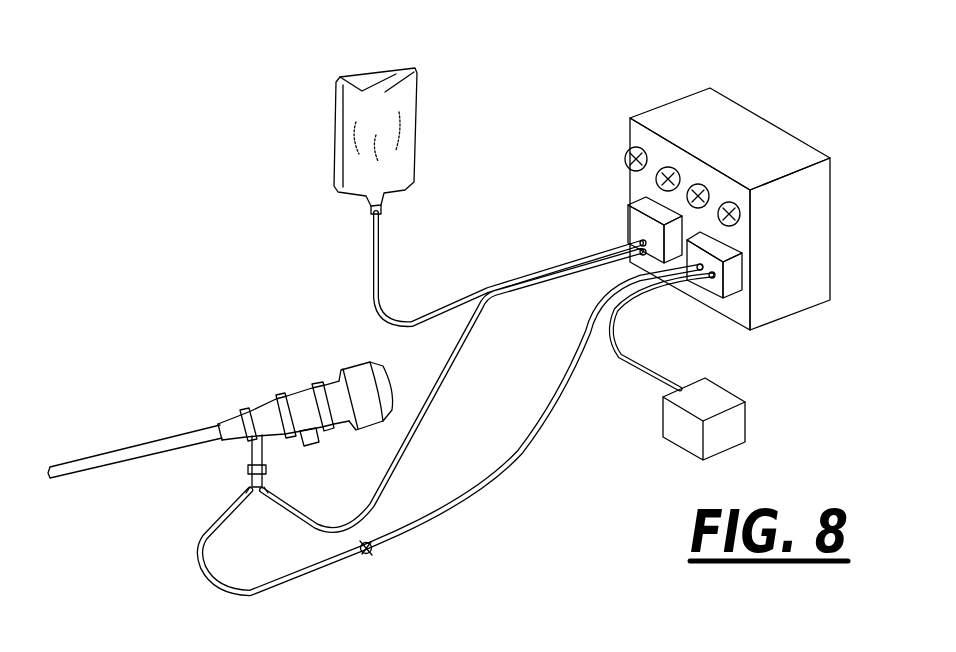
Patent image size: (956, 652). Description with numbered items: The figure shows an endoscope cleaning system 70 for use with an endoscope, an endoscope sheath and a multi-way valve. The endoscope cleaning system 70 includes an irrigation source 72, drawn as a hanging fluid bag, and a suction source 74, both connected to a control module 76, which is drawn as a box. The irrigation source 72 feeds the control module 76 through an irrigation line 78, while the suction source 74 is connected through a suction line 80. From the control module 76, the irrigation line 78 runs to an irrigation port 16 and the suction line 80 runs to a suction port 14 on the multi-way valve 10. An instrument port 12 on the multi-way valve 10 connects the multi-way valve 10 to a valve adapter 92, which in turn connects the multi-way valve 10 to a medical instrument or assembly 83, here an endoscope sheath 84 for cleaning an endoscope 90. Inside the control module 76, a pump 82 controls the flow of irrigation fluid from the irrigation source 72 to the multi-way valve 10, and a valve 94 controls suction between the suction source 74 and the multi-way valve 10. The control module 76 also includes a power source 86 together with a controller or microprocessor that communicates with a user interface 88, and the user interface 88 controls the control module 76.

The multi-way valve 10 is at (171, 486).
The instrument port 12 is at (266, 472).
The suction port 14 is at (246, 492).
The irrigation port 16 is at (268, 500).
The endoscope cleaning system 70 is at (271, 93).
The irrigation source 72 is at (397, 99).
The suction source 74 is at (735, 413).
The control module 76 is at (696, 187).
The irrigation line 78 is at (533, 283).
The suction line 80 is at (615, 351).
The pump 82 is at (735, 118).
The medical instrument or assembly 83 is at (220, 415).
The endoscope sheath 84 is at (207, 433).
The power source 86 is at (775, 143).
The user interface 88 is at (637, 138).
The endoscope 90 is at (333, 403).
The valve adapter 92 is at (255, 465).
The valve 94 is at (735, 272).